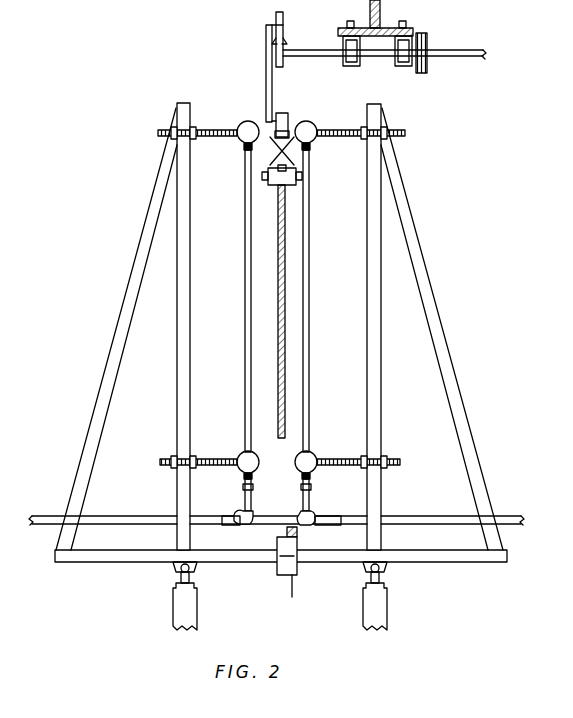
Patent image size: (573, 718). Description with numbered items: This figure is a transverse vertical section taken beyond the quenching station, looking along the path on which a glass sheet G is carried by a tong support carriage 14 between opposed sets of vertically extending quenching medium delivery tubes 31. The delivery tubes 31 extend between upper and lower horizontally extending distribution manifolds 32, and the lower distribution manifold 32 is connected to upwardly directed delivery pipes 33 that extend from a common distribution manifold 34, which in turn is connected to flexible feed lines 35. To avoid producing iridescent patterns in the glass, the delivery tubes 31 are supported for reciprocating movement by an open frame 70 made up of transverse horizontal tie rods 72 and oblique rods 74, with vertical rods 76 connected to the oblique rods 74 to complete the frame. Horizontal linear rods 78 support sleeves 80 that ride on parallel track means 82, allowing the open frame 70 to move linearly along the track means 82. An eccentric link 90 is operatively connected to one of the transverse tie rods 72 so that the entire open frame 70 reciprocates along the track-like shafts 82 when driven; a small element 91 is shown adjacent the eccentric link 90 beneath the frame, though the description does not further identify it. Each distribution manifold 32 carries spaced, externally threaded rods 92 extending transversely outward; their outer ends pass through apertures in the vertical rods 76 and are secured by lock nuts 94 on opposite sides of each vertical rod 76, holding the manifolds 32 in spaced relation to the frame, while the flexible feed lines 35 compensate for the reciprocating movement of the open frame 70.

The tong support carriage 14 is at (248, 50).
The quenching medium delivery tubes 31 is at (245, 210).
The distribution manifolds 32 is at (246, 120).
The delivery pipes 33 is at (302, 494).
The common distribution manifold 34 is at (248, 526).
The flexible feed lines 35 is at (348, 526).
The open frame 70 is at (474, 355).
The transverse horizontal tie rods 72 is at (131, 548).
The oblique rods 74 is at (134, 272).
The vertical rods 76 is at (177, 362).
The horizontal linear rods 78 is at (198, 570).
The sleeves 80 is at (171, 565).
The track means 82 is at (178, 580).
The eccentric link 90 is at (297, 562).
The gauge pointer 91 is at (291, 585).
The externally threaded rods 92 is at (158, 132).
The lock nuts 94 is at (178, 128).
The glass sheet G is at (278, 360).